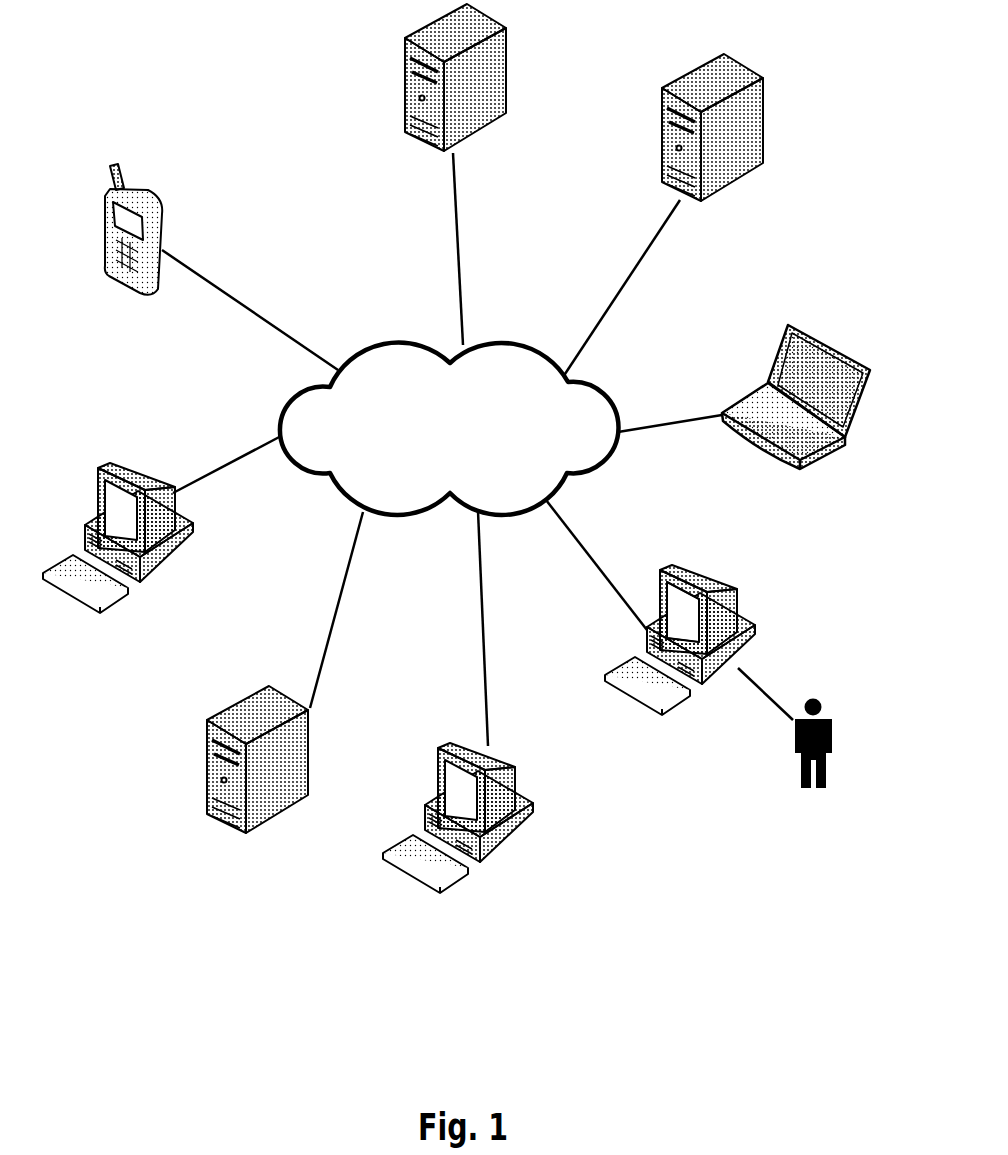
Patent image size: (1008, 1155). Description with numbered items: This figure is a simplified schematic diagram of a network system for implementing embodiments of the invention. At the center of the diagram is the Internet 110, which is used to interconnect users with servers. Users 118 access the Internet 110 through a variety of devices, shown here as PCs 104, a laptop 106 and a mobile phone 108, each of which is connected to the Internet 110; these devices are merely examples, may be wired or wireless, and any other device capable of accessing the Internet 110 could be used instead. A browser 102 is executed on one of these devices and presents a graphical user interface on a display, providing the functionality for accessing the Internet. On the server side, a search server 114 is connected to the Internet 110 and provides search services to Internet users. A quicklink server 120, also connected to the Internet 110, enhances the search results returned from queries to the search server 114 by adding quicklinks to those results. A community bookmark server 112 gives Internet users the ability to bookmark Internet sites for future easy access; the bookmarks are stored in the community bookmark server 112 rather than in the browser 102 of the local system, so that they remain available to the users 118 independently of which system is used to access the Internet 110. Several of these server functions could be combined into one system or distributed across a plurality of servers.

The browser 102 is at (687, 620).
The PC 104 is at (193, 532).
The laptop 106 is at (803, 330).
The mobile phone 108 is at (155, 212).
The Internet 110 is at (532, 347).
The community bookmark server 112 is at (242, 835).
The search server 114 is at (405, 98).
The user 118 is at (803, 785).
The quicklink server 120 is at (765, 110).